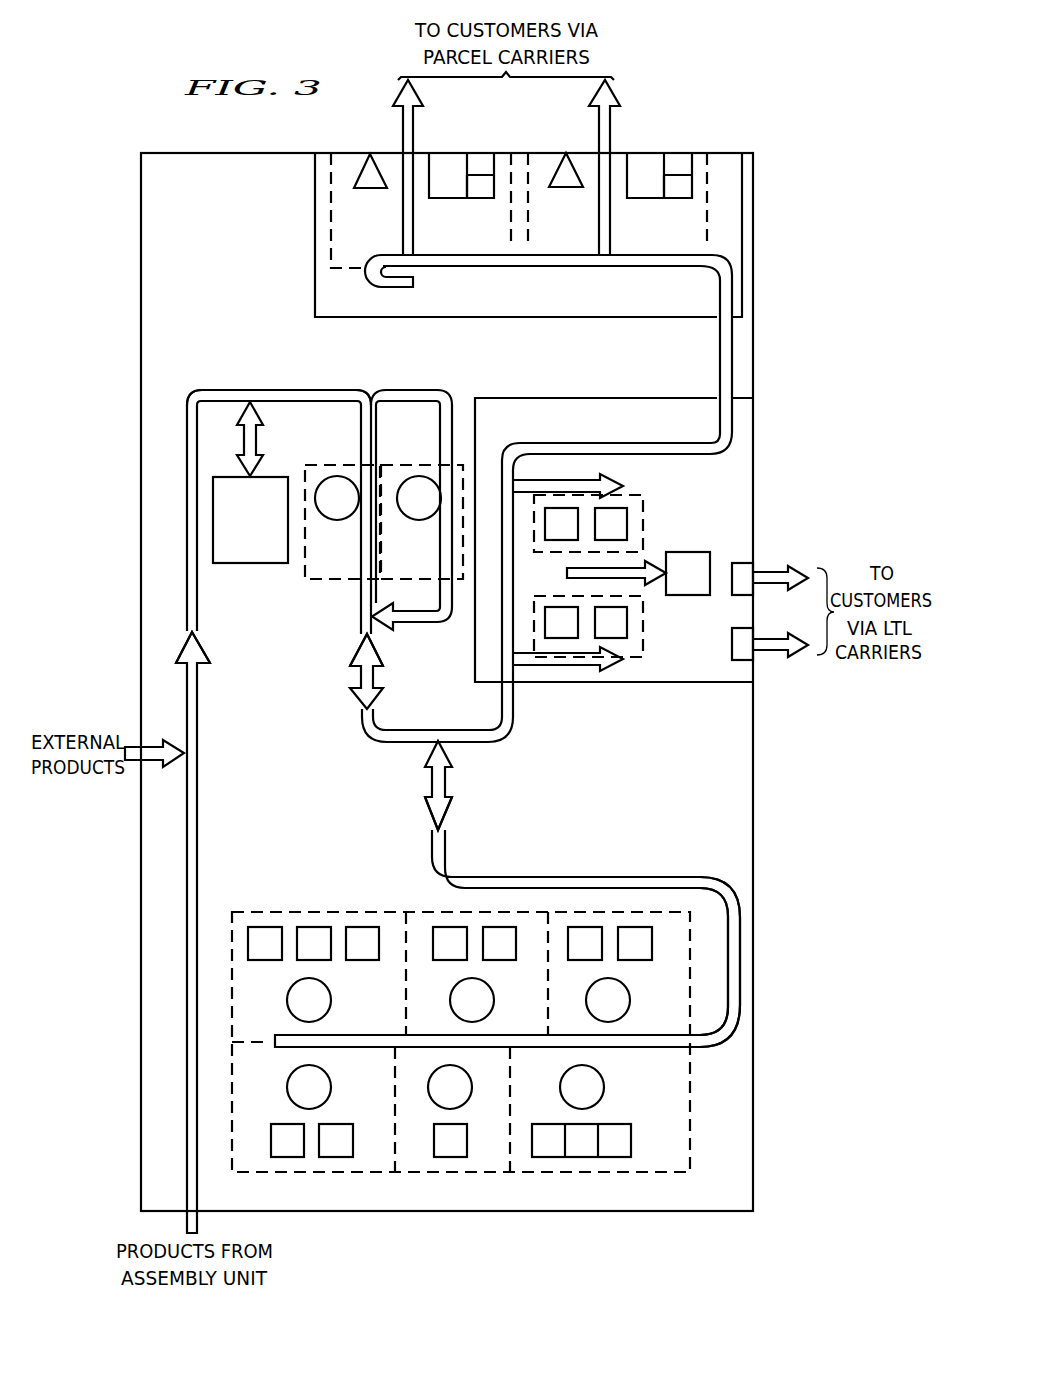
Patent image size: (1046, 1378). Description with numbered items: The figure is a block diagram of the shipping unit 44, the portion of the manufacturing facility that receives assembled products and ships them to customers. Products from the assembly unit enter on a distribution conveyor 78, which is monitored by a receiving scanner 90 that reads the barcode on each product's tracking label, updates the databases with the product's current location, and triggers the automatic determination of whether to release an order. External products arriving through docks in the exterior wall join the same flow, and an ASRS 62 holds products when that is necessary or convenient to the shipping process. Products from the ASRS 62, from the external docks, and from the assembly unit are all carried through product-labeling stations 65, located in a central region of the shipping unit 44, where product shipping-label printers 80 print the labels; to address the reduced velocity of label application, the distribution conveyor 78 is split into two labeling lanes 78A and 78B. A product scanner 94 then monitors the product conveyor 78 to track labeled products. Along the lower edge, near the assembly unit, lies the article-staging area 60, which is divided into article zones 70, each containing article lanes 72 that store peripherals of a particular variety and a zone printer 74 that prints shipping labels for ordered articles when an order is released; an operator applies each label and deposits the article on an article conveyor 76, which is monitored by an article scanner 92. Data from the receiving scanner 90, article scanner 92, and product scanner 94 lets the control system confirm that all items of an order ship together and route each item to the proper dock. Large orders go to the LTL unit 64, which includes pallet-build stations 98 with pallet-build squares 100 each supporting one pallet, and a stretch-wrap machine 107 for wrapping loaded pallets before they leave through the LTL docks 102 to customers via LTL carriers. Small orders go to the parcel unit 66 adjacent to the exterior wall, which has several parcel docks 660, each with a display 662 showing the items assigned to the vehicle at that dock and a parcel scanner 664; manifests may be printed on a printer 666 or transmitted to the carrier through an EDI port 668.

The shipping unit 44 is at (237, 220).
The parcel unit 66 is at (315, 294).
The parcel dock 660 is at (331, 244).
The display 662 is at (453, 160).
The parcel scanner 664 is at (370, 190).
The printer 666 is at (482, 160).
The EDI port 668 is at (482, 198).
The LTL unit 64 is at (592, 683).
The distribution conveyor 78 is at (199, 828).
The labeling lane 78A is at (360, 450).
The labeling lane 78B is at (440, 393).
The ASRS 62 is at (252, 564).
The product-labeling station 65 is at (334, 580).
The product shipping-label printer 80 is at (337, 521).
The receiving scanner 90 is at (183, 642).
The article scanner 92 is at (432, 812).
The product scanner 94 is at (382, 652).
The pallet-build station 98 is at (643, 499).
The pallet-build square 100 is at (628, 628).
The stretch-wrap machine 107 is at (687, 552).
The LTL dock 102 is at (740, 563).
The article-staging area 60 is at (386, 900).
The article zone 70 is at (287, 912).
The article lane 72 is at (447, 961).
The zone printer 74 is at (331, 1081).
The article conveyor 76 is at (712, 1047).